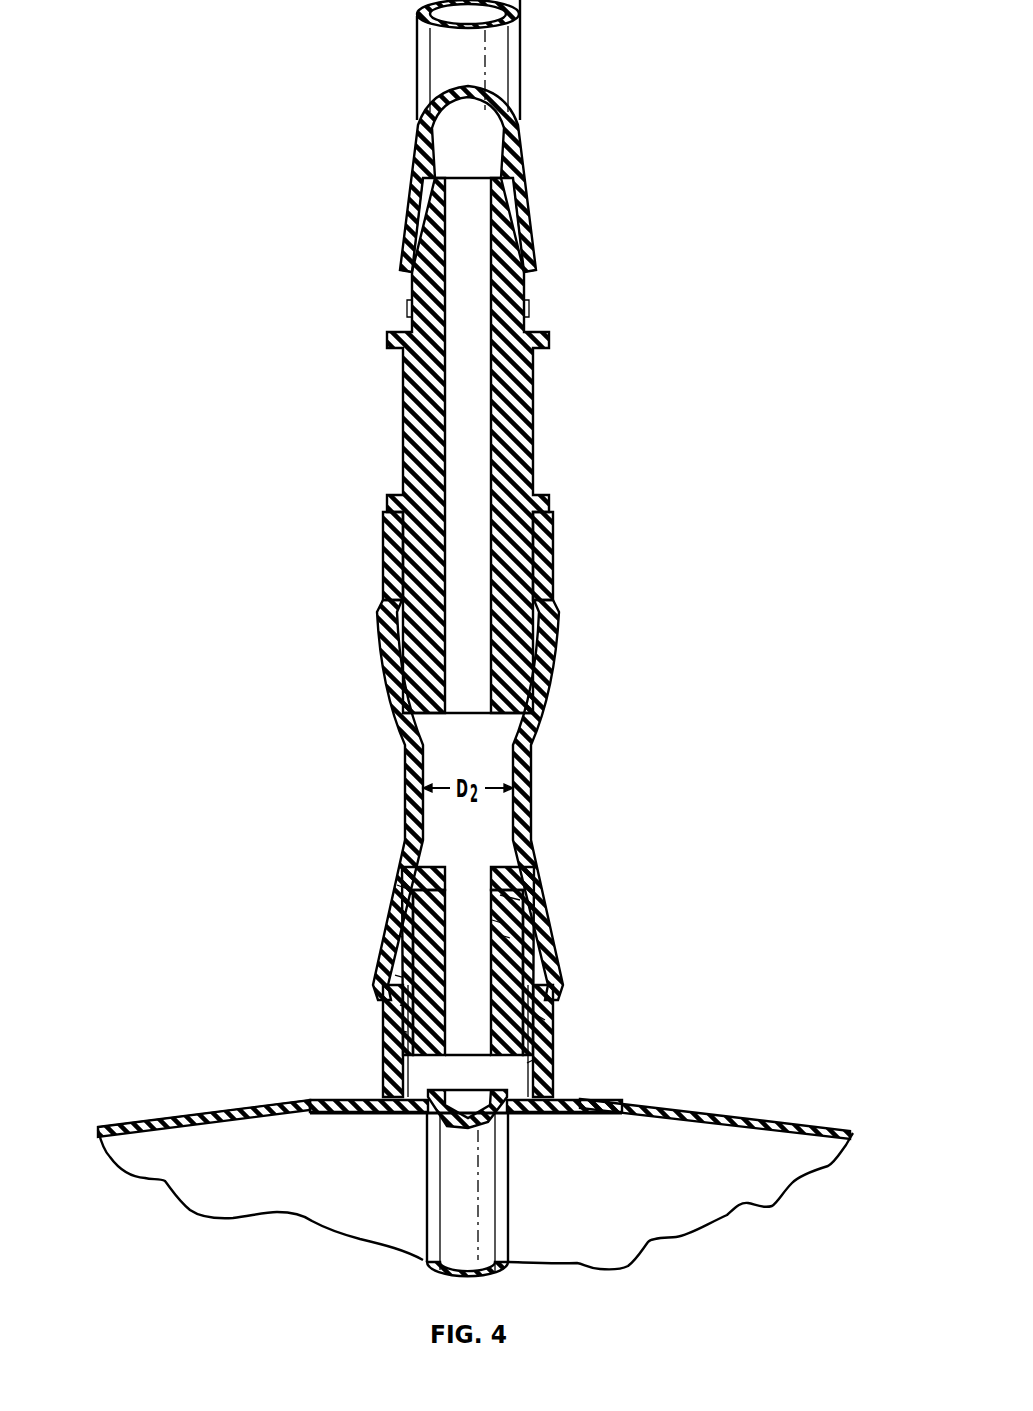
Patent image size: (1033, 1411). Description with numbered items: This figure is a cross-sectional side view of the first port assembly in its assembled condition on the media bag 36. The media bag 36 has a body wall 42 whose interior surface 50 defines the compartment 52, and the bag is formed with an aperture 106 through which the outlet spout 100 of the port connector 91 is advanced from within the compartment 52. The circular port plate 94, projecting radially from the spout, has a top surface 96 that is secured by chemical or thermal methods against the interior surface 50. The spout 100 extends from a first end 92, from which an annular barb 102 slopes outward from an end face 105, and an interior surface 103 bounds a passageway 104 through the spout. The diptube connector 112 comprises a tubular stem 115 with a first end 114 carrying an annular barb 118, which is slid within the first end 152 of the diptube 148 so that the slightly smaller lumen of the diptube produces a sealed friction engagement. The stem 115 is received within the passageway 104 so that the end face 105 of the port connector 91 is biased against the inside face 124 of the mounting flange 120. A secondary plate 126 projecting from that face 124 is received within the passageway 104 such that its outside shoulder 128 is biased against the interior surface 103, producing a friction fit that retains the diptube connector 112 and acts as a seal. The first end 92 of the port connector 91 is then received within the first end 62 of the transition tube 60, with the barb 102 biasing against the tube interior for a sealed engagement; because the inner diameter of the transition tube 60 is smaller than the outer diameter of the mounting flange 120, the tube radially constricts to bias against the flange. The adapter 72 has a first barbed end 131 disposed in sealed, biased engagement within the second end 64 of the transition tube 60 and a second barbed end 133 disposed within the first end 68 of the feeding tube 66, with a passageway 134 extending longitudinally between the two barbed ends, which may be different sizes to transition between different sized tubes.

The media bag 36 is at (263, 1100).
The body wall 42 is at (215, 1125).
The interior surface 50 is at (287, 1118).
The compartment 52 is at (737, 1147).
The transition tube 60 is at (543, 667).
The first end 62 is at (388, 1053).
The second end 64 is at (542, 545).
The feeding tube 66 is at (510, 72).
The first end 68 is at (418, 293).
The first adapter 72 is at (522, 412).
The port connector 91 is at (407, 1032).
The first end 92 is at (403, 937).
The port plate 94 is at (380, 1118).
The top surface 96 is at (613, 1100).
The outlet spout 100 is at (533, 1013).
The annular barb 102 is at (402, 977).
The interior surface 103 is at (527, 1063).
The passageway 104 is at (513, 1130).
The end face 105 is at (513, 887).
The aperture 106 is at (582, 1097).
The diptube connector 112 is at (420, 930).
The first end 114 is at (408, 1007).
The tubular stem 115 is at (502, 923).
The annular barb 118 is at (528, 962).
The mounting flange 120 is at (530, 873).
The inside face 124 is at (397, 888).
The secondary plate 126 is at (437, 893).
The outside shoulder 128 is at (520, 900).
The first barbed end 131 is at (518, 633).
The second barbed end 133 is at (508, 252).
The passageway 134 is at (472, 440).
The diptube 148 is at (510, 1242).
The first end 152 is at (510, 938).